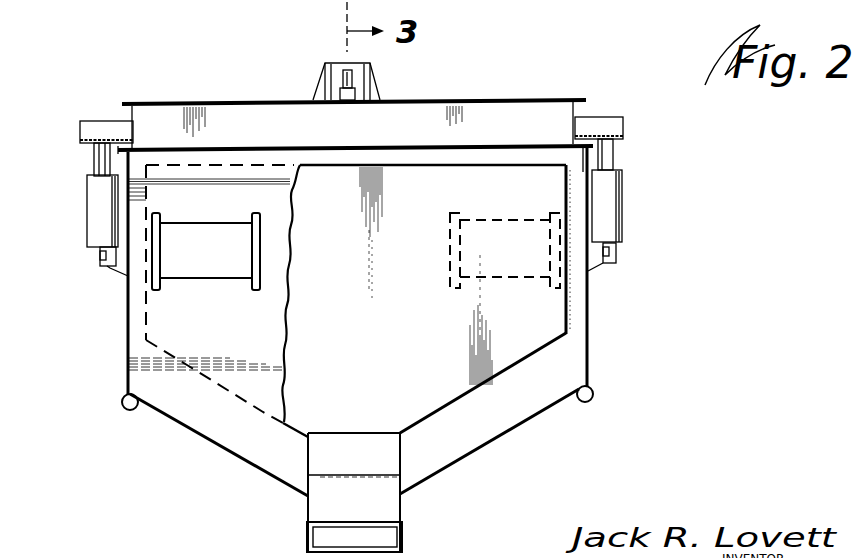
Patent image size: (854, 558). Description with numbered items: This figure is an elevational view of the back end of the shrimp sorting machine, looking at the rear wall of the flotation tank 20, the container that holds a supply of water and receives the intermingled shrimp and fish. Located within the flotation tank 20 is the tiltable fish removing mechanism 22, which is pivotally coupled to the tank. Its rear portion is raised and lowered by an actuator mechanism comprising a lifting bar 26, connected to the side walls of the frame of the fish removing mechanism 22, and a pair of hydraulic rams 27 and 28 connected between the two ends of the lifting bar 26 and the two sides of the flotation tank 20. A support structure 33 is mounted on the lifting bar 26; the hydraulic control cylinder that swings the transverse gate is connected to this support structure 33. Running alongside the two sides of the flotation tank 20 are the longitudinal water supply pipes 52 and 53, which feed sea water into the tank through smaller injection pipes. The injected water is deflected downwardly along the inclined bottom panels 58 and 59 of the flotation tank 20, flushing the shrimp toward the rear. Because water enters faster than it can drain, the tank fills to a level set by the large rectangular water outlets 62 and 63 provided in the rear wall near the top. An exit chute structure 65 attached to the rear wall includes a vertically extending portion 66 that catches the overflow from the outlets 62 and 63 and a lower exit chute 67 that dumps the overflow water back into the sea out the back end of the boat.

The flotation tank 20 is at (116, 315).
The fish removing mechanism 22 is at (491, 96).
The lifting bar 26 is at (88, 121).
The hydraulic ram 27 is at (102, 208).
The hydraulic ram 28 is at (607, 200).
The support structure 33 is at (324, 84).
The longitudinal water supply pipe 52 is at (593, 393).
The longitudinal water supply pipe 53 is at (122, 402).
The inclined bottom panel 58 is at (487, 439).
The inclined bottom panel 59 is at (228, 450).
The water outlet 62 is at (512, 272).
The water outlet 63 is at (177, 278).
The exit chute structure 65 is at (582, 318).
The vertically extending portion 66 is at (568, 302).
The lower exit chute 67 is at (307, 512).